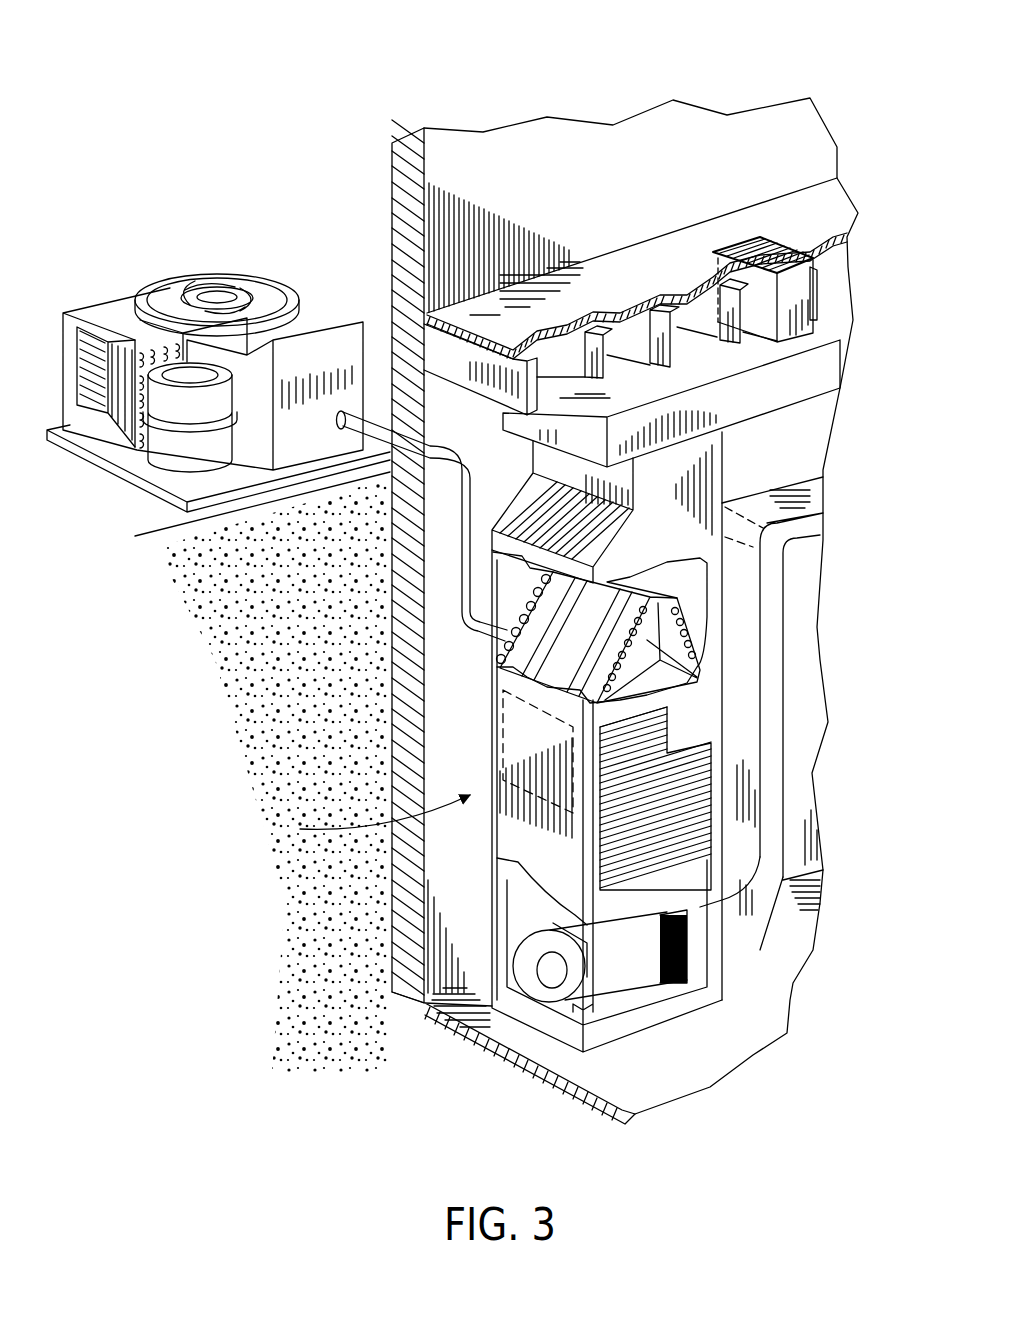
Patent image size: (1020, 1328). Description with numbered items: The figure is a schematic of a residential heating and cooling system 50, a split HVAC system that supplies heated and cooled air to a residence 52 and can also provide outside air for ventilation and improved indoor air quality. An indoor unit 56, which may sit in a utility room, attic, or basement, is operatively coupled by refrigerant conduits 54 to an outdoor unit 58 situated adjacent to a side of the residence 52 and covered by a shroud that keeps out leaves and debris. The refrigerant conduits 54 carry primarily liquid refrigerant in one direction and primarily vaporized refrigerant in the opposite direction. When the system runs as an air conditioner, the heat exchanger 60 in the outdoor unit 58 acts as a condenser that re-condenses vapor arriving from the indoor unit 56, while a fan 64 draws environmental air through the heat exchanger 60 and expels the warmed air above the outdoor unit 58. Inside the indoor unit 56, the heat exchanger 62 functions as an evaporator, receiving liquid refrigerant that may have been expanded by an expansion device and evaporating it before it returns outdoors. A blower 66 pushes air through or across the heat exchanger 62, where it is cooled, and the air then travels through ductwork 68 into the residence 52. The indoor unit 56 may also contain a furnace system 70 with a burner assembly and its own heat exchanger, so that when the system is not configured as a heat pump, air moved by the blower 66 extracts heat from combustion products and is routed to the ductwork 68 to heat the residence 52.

The residential heating and cooling system 50 is at (213, 96).
The residence 52 is at (532, 148).
The refrigerant conduits 54 is at (457, 545).
The indoor unit 56 is at (368, 822).
The outdoor unit 58 is at (173, 265).
The heat exchanger 60 is at (148, 351).
The heat exchanger 62 is at (553, 662).
The fan 64 is at (237, 277).
The blower 66 is at (545, 990).
The ductwork 68 is at (768, 382).
The furnace system 70 is at (503, 747).